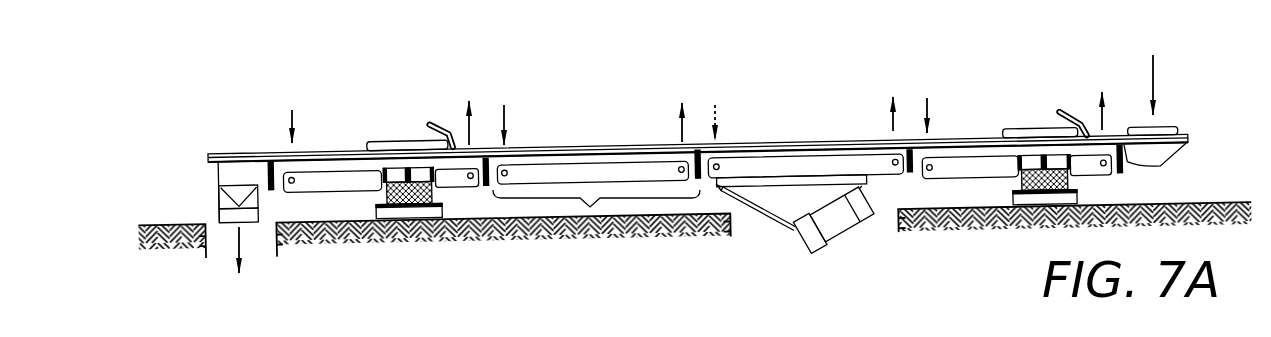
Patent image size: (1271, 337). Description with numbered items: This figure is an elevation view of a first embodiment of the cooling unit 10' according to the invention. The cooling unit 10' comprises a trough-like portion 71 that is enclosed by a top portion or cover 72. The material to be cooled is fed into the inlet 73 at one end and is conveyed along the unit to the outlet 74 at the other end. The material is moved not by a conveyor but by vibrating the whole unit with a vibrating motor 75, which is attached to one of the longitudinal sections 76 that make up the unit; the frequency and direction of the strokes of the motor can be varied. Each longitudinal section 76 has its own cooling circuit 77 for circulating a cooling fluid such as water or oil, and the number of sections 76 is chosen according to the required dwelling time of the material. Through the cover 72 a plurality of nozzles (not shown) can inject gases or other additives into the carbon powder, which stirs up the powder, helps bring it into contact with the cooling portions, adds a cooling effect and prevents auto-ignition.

The cooling unit 10' is at (698, 107).
The trough-like portion 71 is at (938, 152).
The cover 72 is at (828, 145).
The inlet 73 is at (1173, 130).
The outlet 74 is at (218, 226).
The vibrating motor 75 is at (822, 248).
The longitudinal section 76 is at (590, 207).
The cooling circuit 77 is at (592, 175).